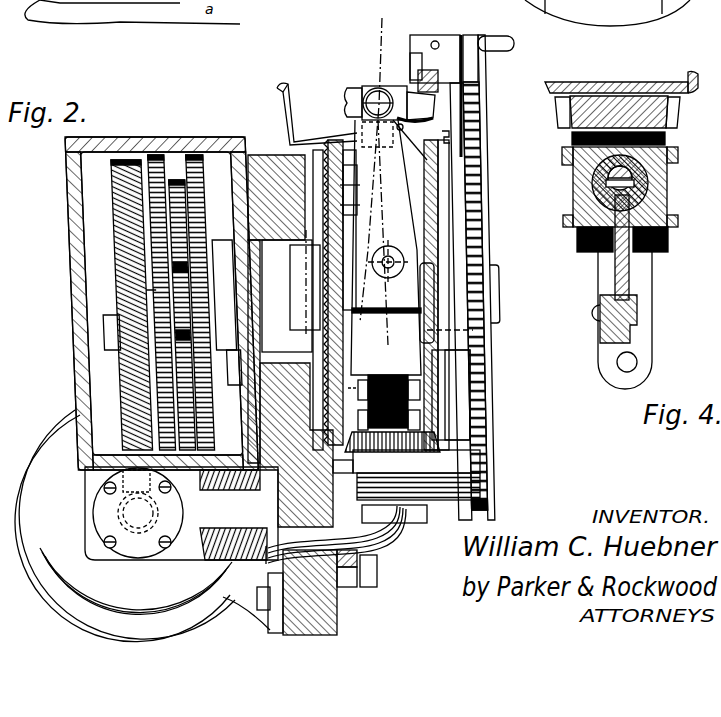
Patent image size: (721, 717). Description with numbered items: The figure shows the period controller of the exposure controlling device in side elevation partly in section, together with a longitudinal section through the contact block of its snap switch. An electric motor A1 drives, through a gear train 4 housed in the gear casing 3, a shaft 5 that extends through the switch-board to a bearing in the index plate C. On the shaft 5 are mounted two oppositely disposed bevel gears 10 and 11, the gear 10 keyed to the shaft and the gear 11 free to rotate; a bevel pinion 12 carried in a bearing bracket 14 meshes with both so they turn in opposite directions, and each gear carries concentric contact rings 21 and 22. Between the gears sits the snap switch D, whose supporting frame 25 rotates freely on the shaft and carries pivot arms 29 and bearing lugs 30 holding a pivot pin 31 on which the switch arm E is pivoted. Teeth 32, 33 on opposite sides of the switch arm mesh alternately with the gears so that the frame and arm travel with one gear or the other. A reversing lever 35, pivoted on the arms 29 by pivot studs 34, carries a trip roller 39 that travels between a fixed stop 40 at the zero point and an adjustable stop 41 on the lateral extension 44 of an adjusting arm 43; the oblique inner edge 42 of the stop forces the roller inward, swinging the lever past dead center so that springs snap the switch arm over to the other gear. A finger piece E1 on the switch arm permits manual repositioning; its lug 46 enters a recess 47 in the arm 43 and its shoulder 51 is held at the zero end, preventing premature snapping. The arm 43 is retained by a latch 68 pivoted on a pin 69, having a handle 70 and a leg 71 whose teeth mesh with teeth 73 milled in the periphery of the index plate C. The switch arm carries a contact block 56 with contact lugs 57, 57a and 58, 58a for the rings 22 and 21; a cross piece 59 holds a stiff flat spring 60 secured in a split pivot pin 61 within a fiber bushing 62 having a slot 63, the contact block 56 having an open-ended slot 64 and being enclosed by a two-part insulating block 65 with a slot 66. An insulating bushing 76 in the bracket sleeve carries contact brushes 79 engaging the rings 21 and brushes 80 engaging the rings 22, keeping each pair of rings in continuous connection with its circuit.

In FIG. 2, the gear casing 3 is at (70, 249).
In FIG. 2, the gear train 4 is at (112, 373).
In FIG. 2, the shaft 5 is at (397, 560).
In FIG. 2, the bevel gear 10 is at (322, 242).
In FIG. 2, the bevel gear 11 is at (463, 148).
In FIG. 2, the bevel pinion 12 is at (440, 440).
In FIG. 2, the bearing bracket 14 is at (430, 490).
In FIG. 2, the contact ring 21 is at (350, 360).
In FIG. 2, the contact ring 22 is at (428, 358).
In FIG. 2, the supporting frame 25 is at (390, 184).
In FIG. 2, the pivot arms 29 is at (394, 225).
In FIG. 2, the bearing lugs 30 is at (388, 258).
In FIG. 2, the pivot pin 31 is at (389, 272).
In FIG. 2, the tooth 32 is at (354, 133).
In FIG. 4, the tooth 32 is at (560, 110).
In FIG. 4, the tooth 33 is at (670, 103).
In FIG. 2, the pivot studs 34 is at (382, 98).
In FIG. 2, the reversing lever 35 is at (420, 92).
In FIG. 2, the trip roller 39 is at (470, 92).
In FIG. 2, the fixed stop 40 is at (434, 283).
In FIG. 2, the adjustable stop 41 is at (435, 72).
In FIG. 2, the inner edge 42 is at (428, 76).
In FIG. 2, the adjusting arm 43 is at (456, 221).
In FIG. 2, the lateral extension 44 is at (425, 35).
In FIG. 2, the lug 46 is at (413, 136).
In FIG. 4, the lug 46 is at (693, 74).
In FIG. 2, the recess 47 is at (442, 131).
In FIG. 2, the shoulder 51 is at (285, 135).
In FIG. 4, the contact block 56 is at (660, 178).
In FIG. 4, the contact lug 57 is at (672, 150).
In FIG. 4, the contact lug 57a is at (678, 223).
In FIG. 2, the contact lug 58 is at (340, 206).
In FIG. 4, the contact lug 58 is at (565, 155).
In FIG. 4, the contact lug 58a is at (572, 221).
In FIG. 4, the cross piece 59 is at (612, 312).
In FIG. 4, the flat spring 60 is at (617, 272).
In FIG. 4, the split pivot pin 61 is at (613, 187).
In FIG. 4, the fiber bushing 62 is at (657, 190).
In FIG. 4, the slot 63 is at (640, 210).
In FIG. 4, the slot 64 is at (566, 234).
In FIG. 4, the insulating block 65 is at (666, 138).
In FIG. 4, the slot 66 is at (633, 256).
In FIG. 2, the latch 68 is at (486, 35).
In FIG. 2, the pin 69 is at (438, 42).
In FIG. 2, the handle 70 is at (505, 45).
In FIG. 2, the leg 71 is at (475, 67).
In FIG. 2, the teeth 73 is at (480, 180).
In FIG. 2, the insulating bushing 76 is at (393, 372).
In FIG. 2, the contact brushes 79 is at (347, 388).
In FIG. 2, the contact brushes 80 is at (433, 413).
In FIG. 2, the electric motor A1 is at (142, 526).
In FIG. 2, the index plate C is at (504, 315).
In FIG. 2, the snap switch D is at (376, 103).
In FIG. 2, the switch arm E is at (352, 150).
In FIG. 4, the switch arm E is at (643, 283).
In FIG. 2, the finger piece E1 is at (307, 134).
In FIG. 4, the finger piece E1 is at (618, 86).